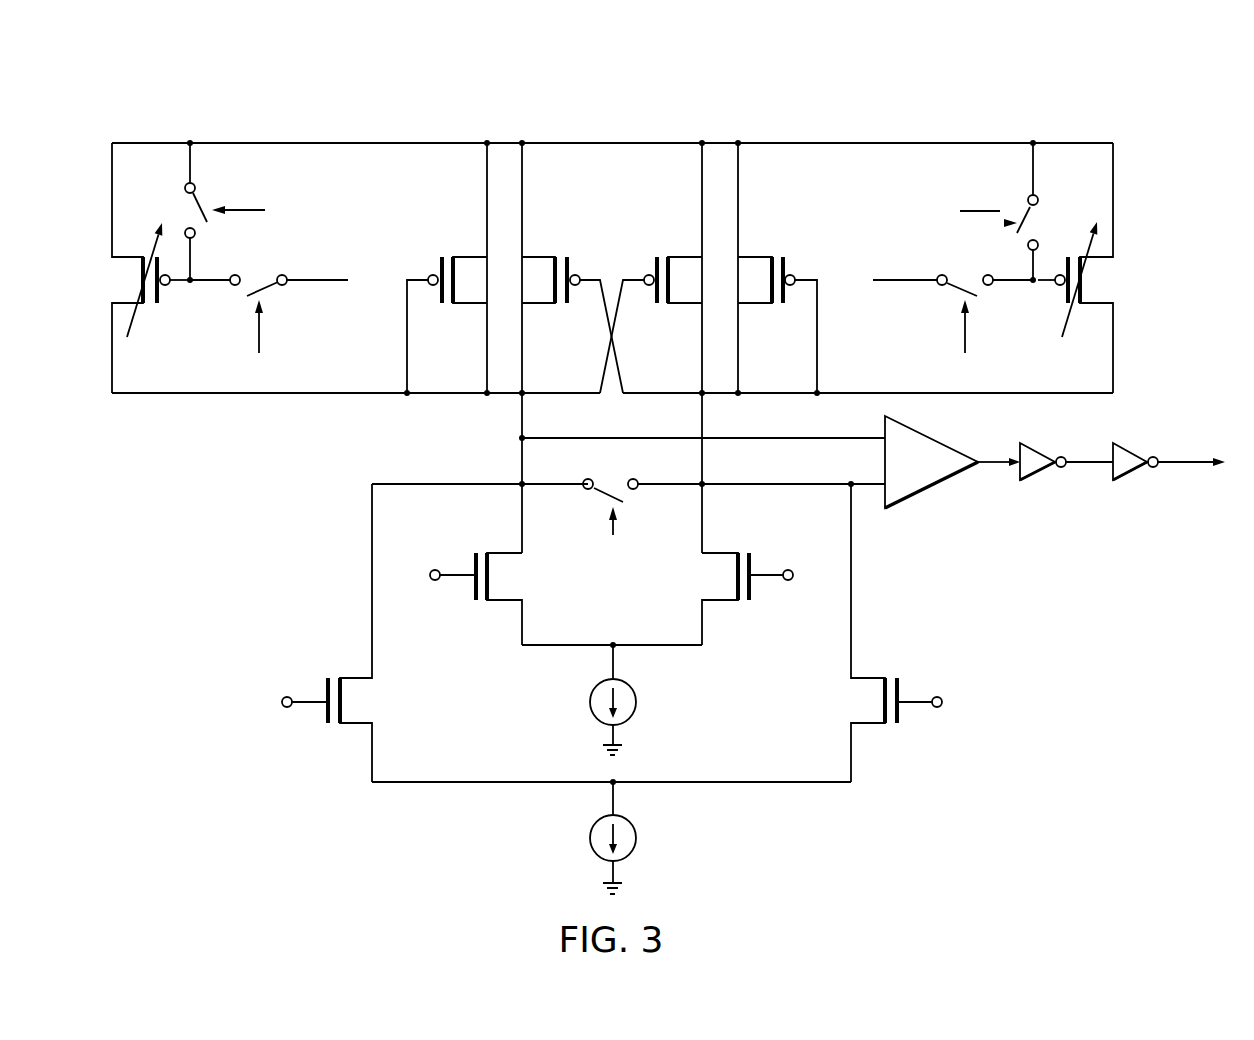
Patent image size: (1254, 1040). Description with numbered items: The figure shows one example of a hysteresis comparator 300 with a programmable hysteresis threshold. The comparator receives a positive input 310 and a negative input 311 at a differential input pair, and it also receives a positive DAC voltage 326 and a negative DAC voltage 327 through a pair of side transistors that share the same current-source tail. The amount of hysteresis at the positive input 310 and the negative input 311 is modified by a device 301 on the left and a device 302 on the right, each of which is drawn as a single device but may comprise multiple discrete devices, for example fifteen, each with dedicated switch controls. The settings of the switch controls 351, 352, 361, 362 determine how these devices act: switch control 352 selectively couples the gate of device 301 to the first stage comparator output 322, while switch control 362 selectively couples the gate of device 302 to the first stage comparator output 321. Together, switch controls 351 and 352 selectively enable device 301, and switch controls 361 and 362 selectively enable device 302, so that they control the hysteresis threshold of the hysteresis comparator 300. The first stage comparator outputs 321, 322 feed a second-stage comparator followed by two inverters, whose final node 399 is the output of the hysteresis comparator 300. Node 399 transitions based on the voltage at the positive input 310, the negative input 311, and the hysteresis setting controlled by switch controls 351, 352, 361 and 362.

The hysteresis comparator 300 is at (443, 91).
The device 301 is at (158, 290).
The device 302 is at (1063, 293).
The positive input 310 is at (473, 588).
The negative input 311 is at (753, 588).
The first stage comparator output 321 is at (902, 278).
The first stage comparator output 322 is at (320, 277).
The positive DAC voltage 326 is at (323, 715).
The negative DAC voltage 327 is at (900, 713).
The switch control 351 is at (244, 210).
The switch control 352 is at (259, 330).
The switch control 361 is at (980, 211).
The switch control 362 is at (965, 330).
The node 399 is at (1192, 467).